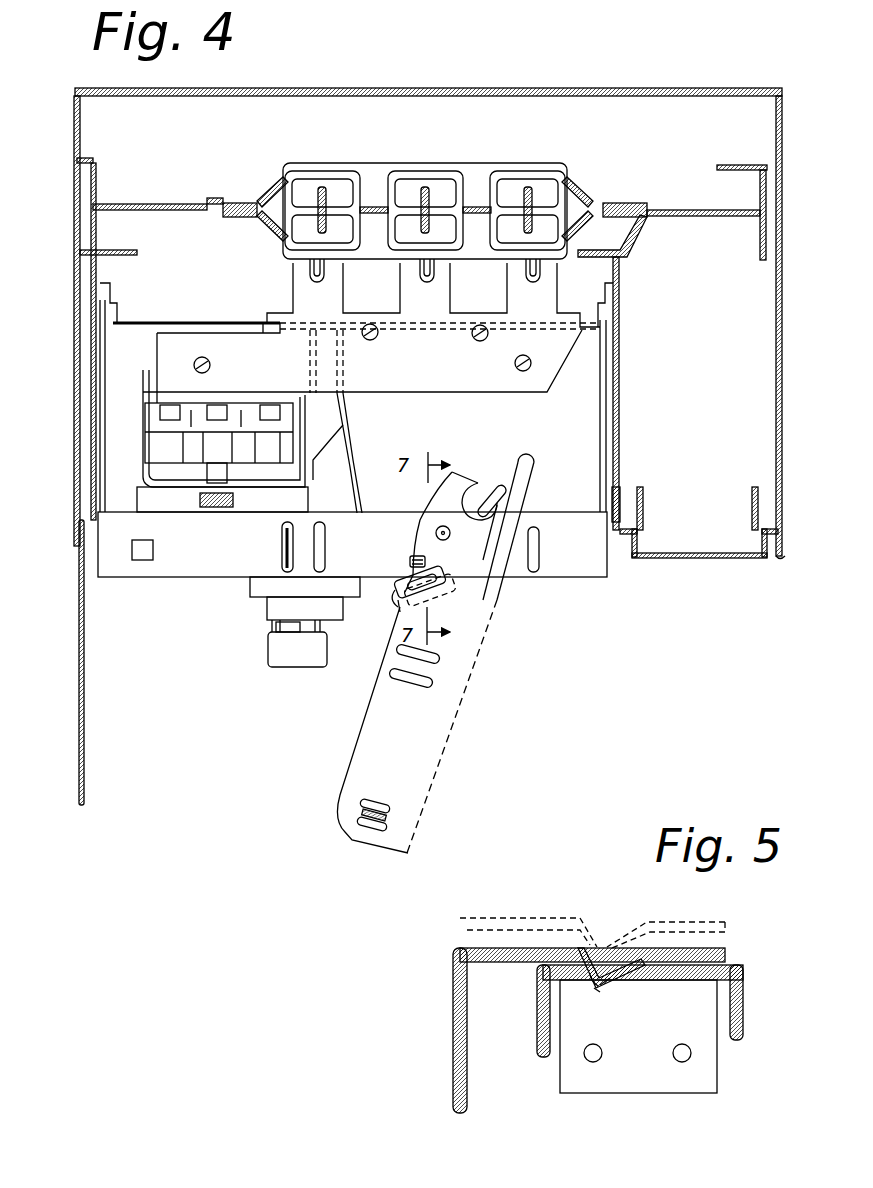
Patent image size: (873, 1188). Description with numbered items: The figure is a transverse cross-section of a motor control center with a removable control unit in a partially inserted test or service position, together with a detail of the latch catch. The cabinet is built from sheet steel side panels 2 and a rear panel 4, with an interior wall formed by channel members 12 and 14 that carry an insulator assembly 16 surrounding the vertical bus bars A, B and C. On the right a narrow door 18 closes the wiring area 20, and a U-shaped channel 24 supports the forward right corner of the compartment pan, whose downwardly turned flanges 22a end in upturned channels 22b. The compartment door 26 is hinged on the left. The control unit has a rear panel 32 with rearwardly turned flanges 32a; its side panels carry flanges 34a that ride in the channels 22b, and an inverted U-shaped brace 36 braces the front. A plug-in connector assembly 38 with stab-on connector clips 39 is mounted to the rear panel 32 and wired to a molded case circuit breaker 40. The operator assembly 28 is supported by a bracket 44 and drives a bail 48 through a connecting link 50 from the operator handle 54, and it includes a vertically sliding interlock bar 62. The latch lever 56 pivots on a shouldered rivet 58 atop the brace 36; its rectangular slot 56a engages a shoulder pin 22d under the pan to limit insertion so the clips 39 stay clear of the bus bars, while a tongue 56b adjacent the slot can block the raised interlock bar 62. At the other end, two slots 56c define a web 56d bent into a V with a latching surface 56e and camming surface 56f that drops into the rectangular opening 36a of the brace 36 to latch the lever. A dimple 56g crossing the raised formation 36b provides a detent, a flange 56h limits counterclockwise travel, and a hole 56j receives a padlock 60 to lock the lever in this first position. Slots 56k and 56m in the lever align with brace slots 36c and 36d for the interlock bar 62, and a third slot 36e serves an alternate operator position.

In FIG. 4, the side panels 2 is at (72, 192).
In FIG. 4, the rear panel 4 is at (529, 88).
In FIG. 4, the channel member 12 is at (138, 204).
In FIG. 4, the channel member 14 is at (668, 210).
In FIG. 4, the insulator assembly 16 is at (400, 187).
In FIG. 4, the bus bar A is at (321, 186).
In FIG. 4, the bus bar B is at (426, 186).
In FIG. 4, the bus bar C is at (530, 186).
In FIG. 4, the door 18 is at (722, 558).
In FIG. 4, the wiring area 20 is at (706, 387).
In FIG. 4, the flange 22a is at (97, 380).
In FIG. 4, the channel 22b is at (101, 283).
In FIG. 4, the shoulder pin 22d is at (507, 493).
In FIG. 4, the U-shaped channel 24 is at (643, 490).
In FIG. 4, the door 26 is at (84, 730).
In FIG. 4, the operator assembly 28 is at (278, 675).
In FIG. 4, the rear panel 32 is at (193, 320).
In FIG. 4, the flanges 32a is at (118, 305).
In FIG. 4, the flange 34a is at (100, 352).
In FIG. 4, the brace 36 is at (557, 575).
In FIG. 5, the brace 36 is at (740, 977).
In FIG. 4, the rectangular opening 36a is at (153, 547).
In FIG. 5, the rectangular opening 36a is at (643, 981).
In FIG. 4, the raised formation 36b is at (412, 563).
In FIG. 4, the slot 36c is at (281, 532).
In FIG. 4, the slot 36d is at (325, 547).
In FIG. 4, the third slot 36e is at (539, 548).
In FIG. 4, the plug-in connector assembly 38 is at (290, 315).
In FIG. 4, the stab-on connector clips 39 is at (338, 262).
In FIG. 4, the molded case circuit breaker 40 is at (235, 405).
In FIG. 4, the bracket 44 is at (353, 447).
In FIG. 4, the bail 48 is at (140, 478).
In FIG. 4, the connecting link 50 is at (337, 432).
In FIG. 4, the operator handle 54 is at (308, 652).
In FIG. 4, the lever 56 is at (408, 748).
In FIG. 5, the lever 56 is at (460, 951).
In FIG. 4, the rectangular slot 56a is at (492, 482).
In FIG. 4, the tongue 56b is at (528, 460).
In FIG. 4, the slots 56c is at (393, 805).
In FIG. 5, the slots 56c is at (617, 957).
In FIG. 4, the web 56d is at (391, 821).
In FIG. 5, the web 56d is at (603, 990).
In FIG. 5, the latching surface 56e is at (587, 980).
In FIG. 5, the camming surface 56f is at (607, 987).
In FIG. 4, the dimple 56g is at (393, 580).
In FIG. 4, the flange 56h is at (484, 636).
In FIG. 4, the hole 56j is at (440, 580).
In FIG. 4, the slot 56k is at (434, 683).
In FIG. 4, the slot 56m is at (441, 660).
In FIG. 4, the shouldered rivet 58 is at (451, 535).
In FIG. 4, the padlock 60 is at (400, 615).
In FIG. 4, the interlock bar 62 is at (281, 549).